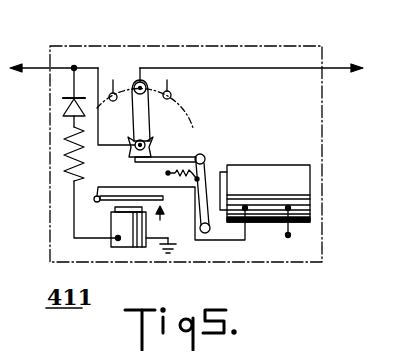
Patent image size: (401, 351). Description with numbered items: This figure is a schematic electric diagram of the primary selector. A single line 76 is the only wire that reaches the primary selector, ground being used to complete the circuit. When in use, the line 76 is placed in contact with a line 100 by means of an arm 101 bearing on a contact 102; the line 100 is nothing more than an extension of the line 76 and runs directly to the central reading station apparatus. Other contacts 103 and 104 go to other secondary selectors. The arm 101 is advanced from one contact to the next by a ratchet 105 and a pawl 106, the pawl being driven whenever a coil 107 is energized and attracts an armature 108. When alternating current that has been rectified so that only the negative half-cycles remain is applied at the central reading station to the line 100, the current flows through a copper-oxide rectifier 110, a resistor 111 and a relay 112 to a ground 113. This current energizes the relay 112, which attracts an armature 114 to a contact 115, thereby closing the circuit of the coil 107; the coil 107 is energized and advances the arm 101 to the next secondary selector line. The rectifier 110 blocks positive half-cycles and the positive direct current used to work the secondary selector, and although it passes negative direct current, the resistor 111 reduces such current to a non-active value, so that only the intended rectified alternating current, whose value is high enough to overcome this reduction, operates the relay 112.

The line 76 is at (334, 71).
The line 100 is at (43, 70).
The arm 101 is at (150, 118).
The contact 102 is at (146, 84).
The contact 103 is at (116, 82).
The contact 104 is at (172, 93).
The ratchet 105 is at (155, 147).
The pawl 106 is at (186, 156).
The coil 107 is at (310, 180).
The armature 108 is at (207, 170).
The copper-oxide rectifier 110 is at (62, 107).
The resistor 111 is at (62, 152).
The relay 112 is at (143, 248).
The ground 113 is at (168, 256).
The armature 114 is at (163, 197).
The contact 115 is at (160, 217).